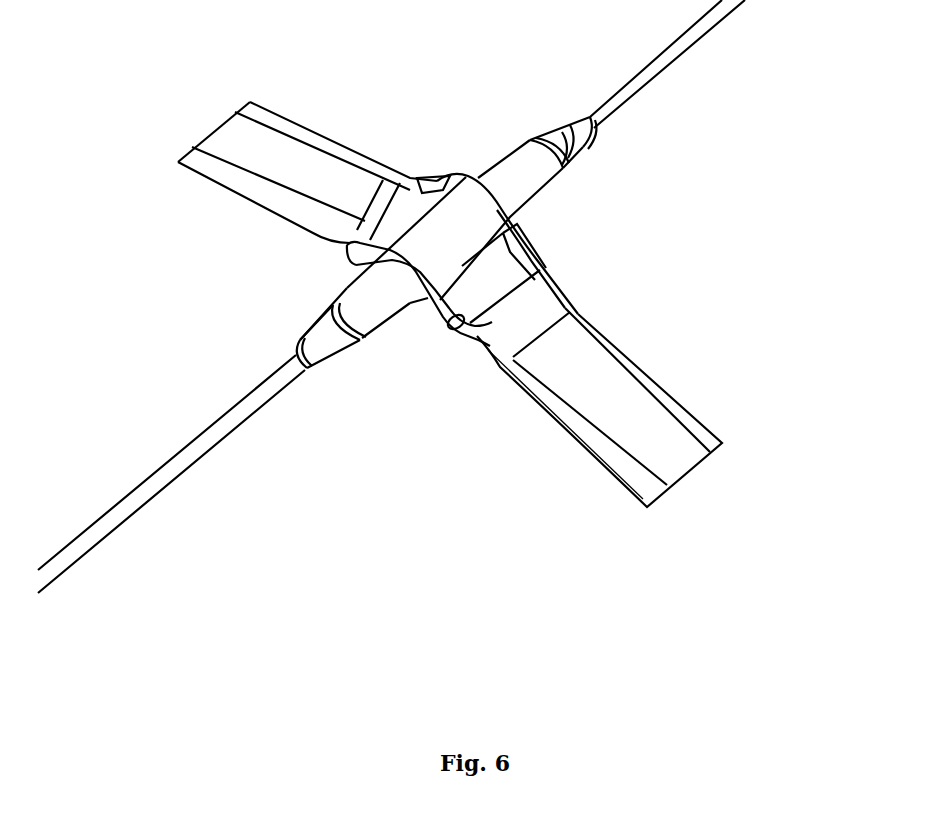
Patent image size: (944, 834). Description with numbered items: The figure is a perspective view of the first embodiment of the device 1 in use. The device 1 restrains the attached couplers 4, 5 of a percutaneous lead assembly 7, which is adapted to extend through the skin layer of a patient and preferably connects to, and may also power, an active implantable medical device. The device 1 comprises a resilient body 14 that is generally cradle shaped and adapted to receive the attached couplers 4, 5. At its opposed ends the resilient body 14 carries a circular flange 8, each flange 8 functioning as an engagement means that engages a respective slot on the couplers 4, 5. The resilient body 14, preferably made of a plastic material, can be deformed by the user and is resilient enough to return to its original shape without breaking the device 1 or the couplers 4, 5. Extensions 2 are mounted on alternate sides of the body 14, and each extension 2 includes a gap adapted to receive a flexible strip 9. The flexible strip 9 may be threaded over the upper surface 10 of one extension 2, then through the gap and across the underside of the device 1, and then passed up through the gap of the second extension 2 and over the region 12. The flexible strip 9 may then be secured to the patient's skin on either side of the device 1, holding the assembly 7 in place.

The device 1 is at (467, 222).
The extension 2 is at (460, 337).
The coupler 4 is at (528, 170).
The coupler 5 is at (343, 330).
The percutaneous lead assembly 7 is at (592, 113).
The circular flange 8 is at (413, 303).
The flexible strip 9 is at (592, 395).
The upper surface 10 is at (503, 283).
The region 12 is at (388, 202).
The resilient body 14 is at (428, 212).